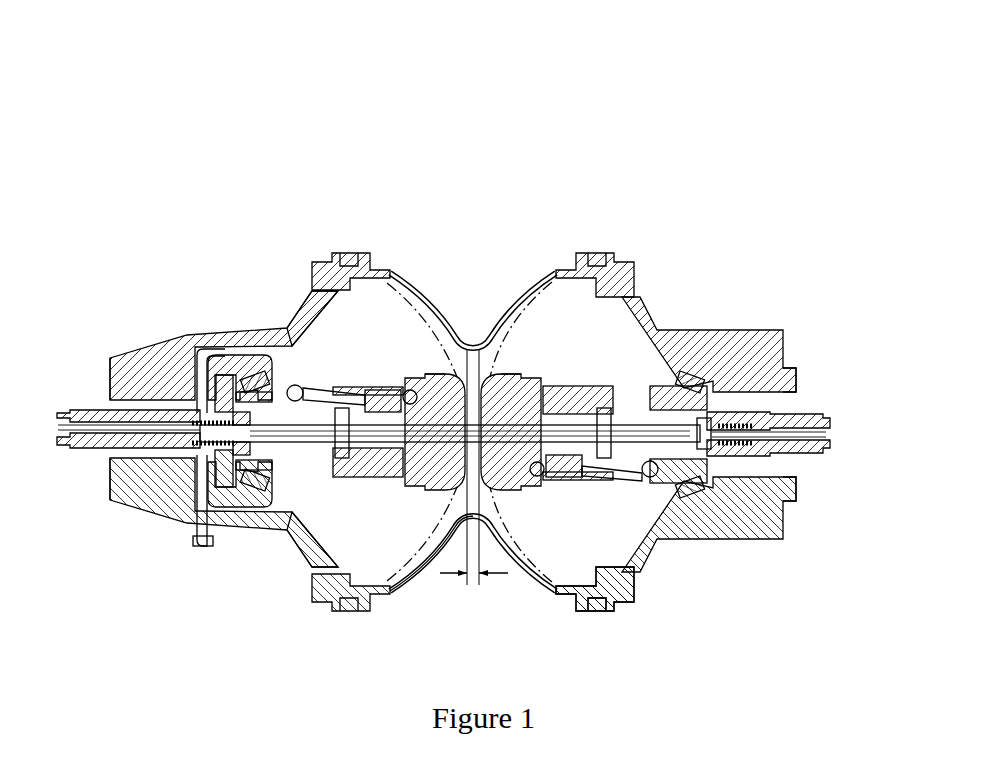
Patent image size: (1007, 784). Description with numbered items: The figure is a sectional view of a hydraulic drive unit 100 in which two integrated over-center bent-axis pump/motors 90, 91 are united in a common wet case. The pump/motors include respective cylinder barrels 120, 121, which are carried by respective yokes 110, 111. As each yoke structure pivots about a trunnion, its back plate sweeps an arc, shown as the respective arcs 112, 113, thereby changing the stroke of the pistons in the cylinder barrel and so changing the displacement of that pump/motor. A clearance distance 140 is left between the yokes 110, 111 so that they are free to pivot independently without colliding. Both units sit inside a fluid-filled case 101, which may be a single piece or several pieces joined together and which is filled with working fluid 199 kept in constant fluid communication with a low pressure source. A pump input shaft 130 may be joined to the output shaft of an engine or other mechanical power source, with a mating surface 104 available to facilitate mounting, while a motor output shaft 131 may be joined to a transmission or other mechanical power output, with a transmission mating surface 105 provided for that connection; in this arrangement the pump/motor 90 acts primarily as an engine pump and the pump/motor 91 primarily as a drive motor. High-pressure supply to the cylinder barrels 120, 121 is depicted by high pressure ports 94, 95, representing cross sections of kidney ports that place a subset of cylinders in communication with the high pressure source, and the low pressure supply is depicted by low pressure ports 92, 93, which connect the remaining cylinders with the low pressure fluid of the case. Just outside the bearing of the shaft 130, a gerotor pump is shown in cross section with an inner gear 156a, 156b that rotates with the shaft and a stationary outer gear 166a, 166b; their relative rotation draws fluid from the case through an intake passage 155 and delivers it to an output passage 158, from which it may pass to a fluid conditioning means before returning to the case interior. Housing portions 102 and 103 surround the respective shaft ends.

The hydraulic drive unit 100 is at (226, 95).
The pump/motor 90 is at (306, 192).
The pump/motor 91 is at (594, 188).
The low pressure port 92 is at (418, 583).
The low pressure port 93 is at (612, 535).
The high pressure port 94 is at (402, 376).
The high pressure port 95 is at (543, 377).
The fluid-filled case 101 is at (452, 377).
The first housing body 102 is at (182, 337).
The second housing body 103 is at (728, 330).
The mating surface 104 is at (109, 372).
The transmission mating surface 105 is at (797, 375).
The yoke 110 is at (462, 377).
The yoke 111 is at (505, 377).
The arc 112 is at (395, 378).
The arc 113 is at (518, 570).
The cylinder barrel 120 is at (330, 545).
The cylinder barrel 121 is at (578, 368).
The pump input shaft 130 is at (90, 450).
The motor output shaft 131 is at (818, 412).
The clearance distance 140 is at (470, 584).
The intake passage 155 is at (255, 355).
The inner gear 156a is at (224, 376).
The inner gear 156b is at (224, 488).
The output passage 158 is at (204, 540).
The outer gear 166a is at (198, 362).
The outer gear 166b is at (198, 527).
The working fluid 199 is at (330, 338).